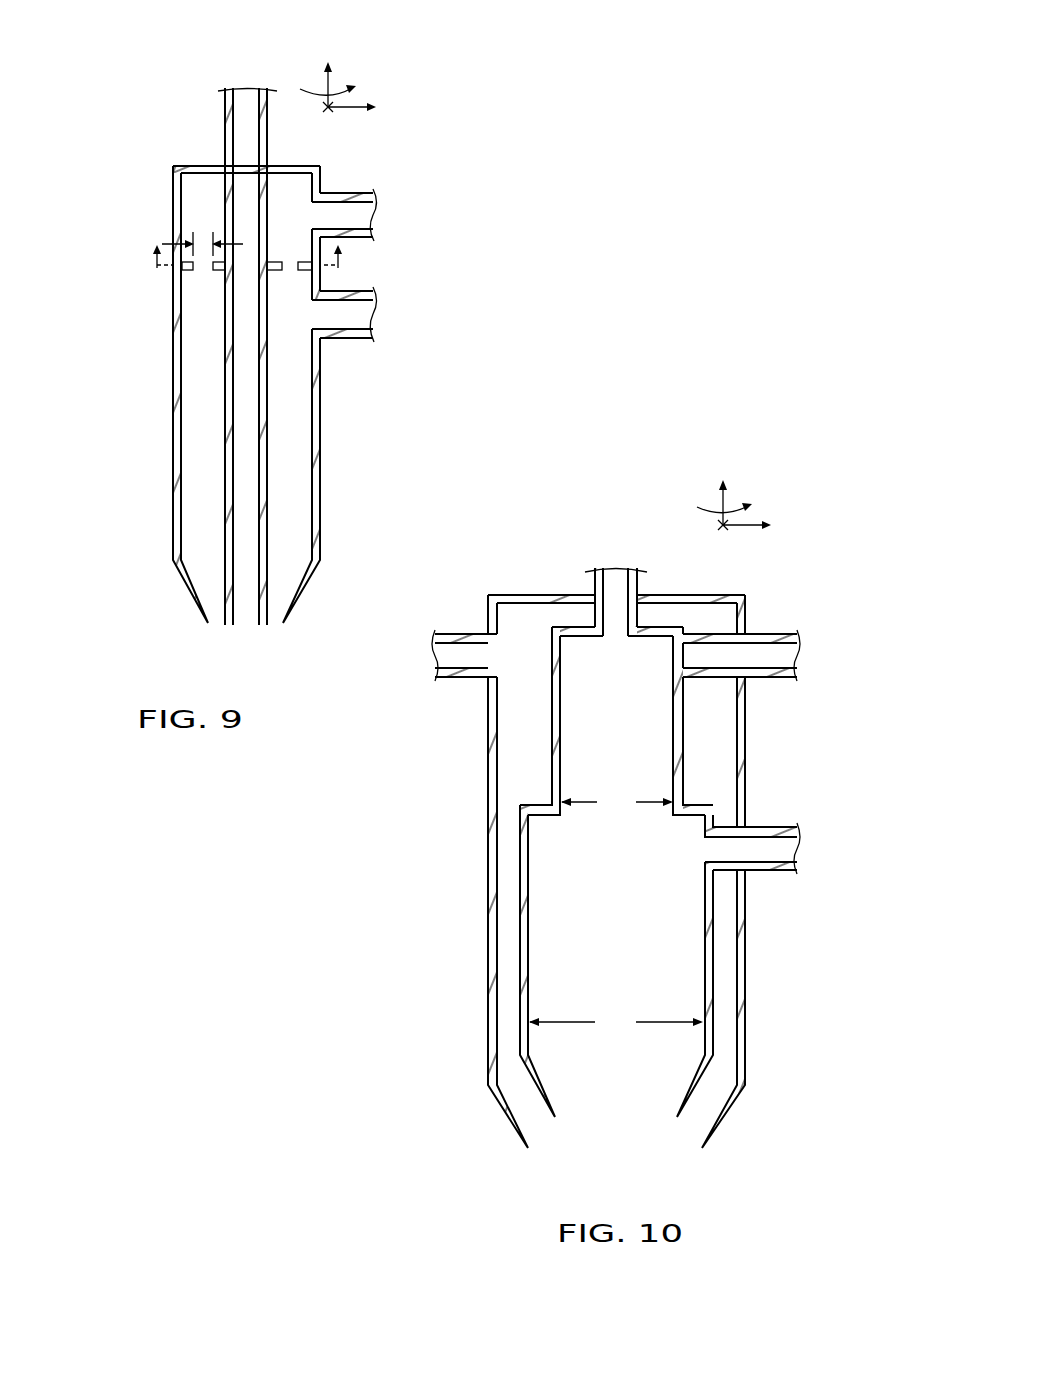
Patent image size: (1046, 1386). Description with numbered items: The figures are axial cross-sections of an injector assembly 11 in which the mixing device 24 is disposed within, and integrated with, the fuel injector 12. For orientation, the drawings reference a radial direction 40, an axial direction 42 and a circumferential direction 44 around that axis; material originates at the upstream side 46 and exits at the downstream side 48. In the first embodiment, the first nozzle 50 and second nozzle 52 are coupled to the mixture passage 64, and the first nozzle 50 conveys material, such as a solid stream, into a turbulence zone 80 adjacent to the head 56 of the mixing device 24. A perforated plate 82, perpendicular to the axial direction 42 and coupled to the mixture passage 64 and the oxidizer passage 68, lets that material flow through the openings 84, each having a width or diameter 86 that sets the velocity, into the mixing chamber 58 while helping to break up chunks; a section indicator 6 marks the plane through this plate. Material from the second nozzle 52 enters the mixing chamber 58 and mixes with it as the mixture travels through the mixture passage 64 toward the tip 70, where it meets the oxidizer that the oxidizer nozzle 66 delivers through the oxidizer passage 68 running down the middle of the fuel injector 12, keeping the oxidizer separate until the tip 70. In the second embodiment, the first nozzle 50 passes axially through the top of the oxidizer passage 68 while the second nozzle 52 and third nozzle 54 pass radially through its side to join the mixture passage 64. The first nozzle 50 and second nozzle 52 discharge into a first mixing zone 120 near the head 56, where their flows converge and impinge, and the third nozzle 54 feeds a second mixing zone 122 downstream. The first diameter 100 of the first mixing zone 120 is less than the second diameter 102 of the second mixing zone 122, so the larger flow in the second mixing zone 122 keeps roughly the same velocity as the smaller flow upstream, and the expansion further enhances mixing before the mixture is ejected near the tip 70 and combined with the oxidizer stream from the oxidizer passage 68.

In FIG. 9, the section line 6- 6 is at (246, 255).
In FIG. 9, the injector assembly 11 is at (429, 163).
In FIG. 10, the injector assembly 11 is at (566, 538).
In FIG. 9, the fuel injector 12 is at (247, 31).
In FIG. 10, the fuel injector 12 is at (618, 524).
In FIG. 9, the mixing device 24 is at (114, 264).
In FIG. 10, the mixing device 24 is at (694, 741).
In FIG. 9, the radial direction 40 is at (346, 111).
In FIG. 10, the radial direction 40 is at (742, 529).
In FIG. 9, the axial direction 42 is at (331, 78).
In FIG. 10, the axial direction 42 is at (728, 498).
In FIG. 9, the circumferential direction 44 is at (358, 92).
In FIG. 10, the circumferential direction 44 is at (753, 509).
In FIG. 9, the upstream side 46 is at (162, 65).
In FIG. 10, the upstream side 46 is at (486, 557).
In FIG. 9, the downstream side 48 is at (180, 604).
In FIG. 10, the downstream side 48 is at (497, 1147).
In FIG. 9, the first nozzle 50 is at (338, 192).
In FIG. 10, the first nozzle 50 is at (644, 589).
In FIG. 9, the second nozzle 52 is at (362, 340).
In FIG. 10, the second nozzle 52 is at (750, 678).
In FIG. 10, the third nozzle 54 is at (753, 828).
In FIG. 9, the head 56 is at (192, 172).
In FIG. 10, the head 56 is at (553, 716).
In FIG. 9, the mixing chamber 58 is at (290, 322).
In FIG. 9, the mixture passage 64 is at (321, 486).
In FIG. 10, the mixture passage 64 is at (712, 988).
In FIG. 9, the oxidizer nozzle 66 is at (224, 124).
In FIG. 10, the oxidizer nozzle 66 is at (463, 680).
In FIG. 9, the oxidizer passage 68 is at (226, 507).
In FIG. 10, the oxidizer passage 68 is at (490, 870).
In FIG. 9, the tip portion 70 is at (249, 636).
In FIG. 10, the tip portion 70 is at (630, 1145).
In FIG. 9, the turbulence zone 80 is at (208, 210).
In FIG. 9, the perforated plate 82 is at (187, 272).
In FIG. 9, the openings 84 is at (202, 278).
In FIG. 9, the width or diameter 86 is at (169, 242).
In FIG. 10, the first diameter 100 is at (617, 804).
In FIG. 10, the second diameter 102 is at (616, 1024).
In FIG. 10, the first mixing zone 120 is at (616, 706).
In FIG. 10, the second mixing zone 122 is at (616, 888).